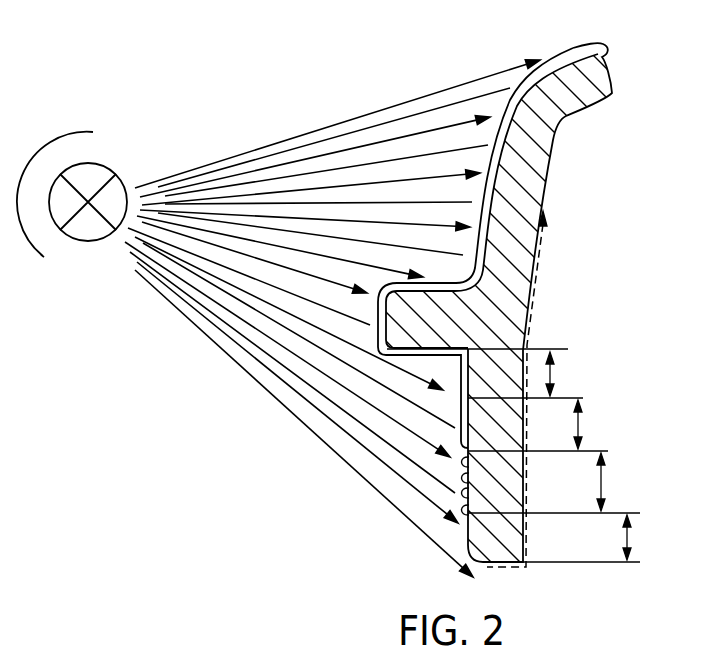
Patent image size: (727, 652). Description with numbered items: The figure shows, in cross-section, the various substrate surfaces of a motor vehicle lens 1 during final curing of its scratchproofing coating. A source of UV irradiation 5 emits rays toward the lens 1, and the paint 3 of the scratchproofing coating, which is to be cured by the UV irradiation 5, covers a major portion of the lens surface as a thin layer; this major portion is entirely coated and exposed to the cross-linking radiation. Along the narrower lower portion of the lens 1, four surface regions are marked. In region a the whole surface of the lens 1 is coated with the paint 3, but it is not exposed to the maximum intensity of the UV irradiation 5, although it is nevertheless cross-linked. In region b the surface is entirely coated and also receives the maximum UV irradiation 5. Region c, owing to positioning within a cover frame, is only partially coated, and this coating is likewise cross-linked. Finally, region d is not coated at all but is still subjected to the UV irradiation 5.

The lens 1 is at (528, 173).
The paint 3 is at (571, 49).
The UV irradiation 5 is at (94, 176).
The region a is at (552, 372).
The region b is at (580, 422).
The region c is at (603, 483).
The region d is at (629, 533).